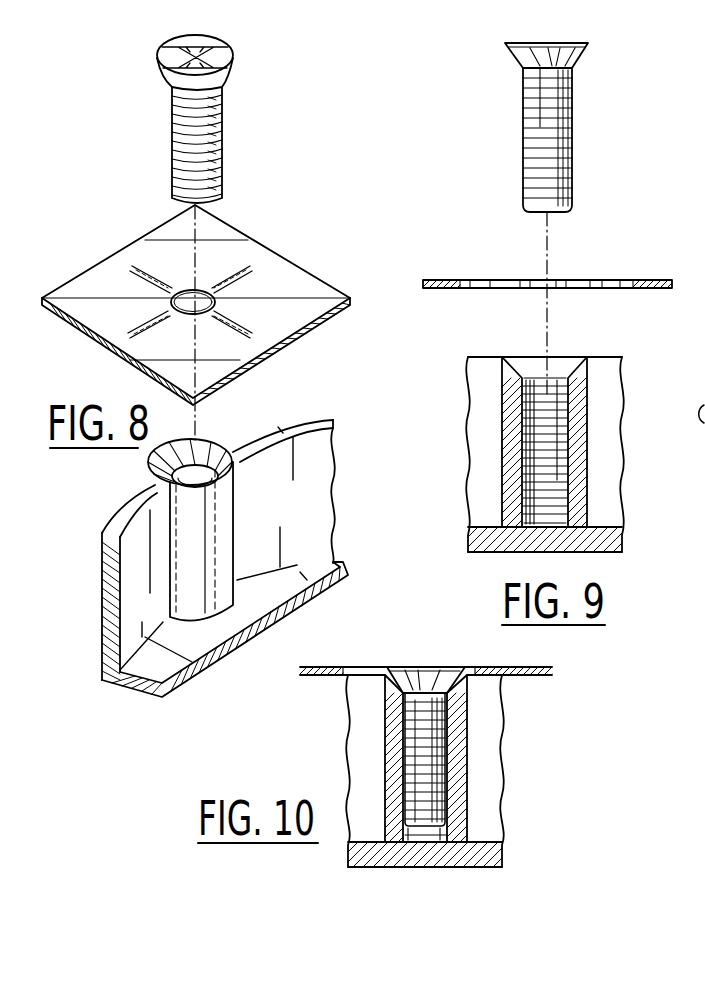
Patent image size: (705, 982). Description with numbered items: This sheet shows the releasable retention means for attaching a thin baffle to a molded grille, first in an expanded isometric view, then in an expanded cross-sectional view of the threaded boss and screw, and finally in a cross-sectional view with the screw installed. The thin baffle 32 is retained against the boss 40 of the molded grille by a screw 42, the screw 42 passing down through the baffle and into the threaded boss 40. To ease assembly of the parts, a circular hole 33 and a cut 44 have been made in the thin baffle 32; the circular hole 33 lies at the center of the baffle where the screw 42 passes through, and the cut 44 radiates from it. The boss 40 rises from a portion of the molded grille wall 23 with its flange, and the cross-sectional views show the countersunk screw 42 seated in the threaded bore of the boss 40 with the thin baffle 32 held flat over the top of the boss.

In FIG. 8, the panel / wall section 23 is at (320, 462).
In FIG. 8, the thin baffle 32 is at (258, 250).
In FIG. 9, the thin baffle 32 is at (648, 278).
In FIG. 8, the circular hole 33 is at (184, 289).
In FIG. 8, the boss 40 is at (217, 442).
In FIG. 9, the boss 40 is at (578, 428).
In FIG. 10, the boss 40 is at (460, 782).
In FIG. 8, the screw 42 is at (220, 138).
In FIG. 9, the screw 42 is at (568, 138).
In FIG. 8, the cut 44 is at (240, 325).